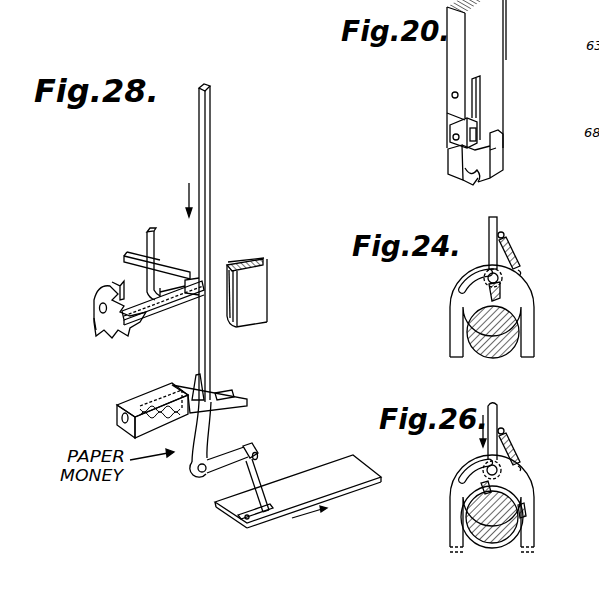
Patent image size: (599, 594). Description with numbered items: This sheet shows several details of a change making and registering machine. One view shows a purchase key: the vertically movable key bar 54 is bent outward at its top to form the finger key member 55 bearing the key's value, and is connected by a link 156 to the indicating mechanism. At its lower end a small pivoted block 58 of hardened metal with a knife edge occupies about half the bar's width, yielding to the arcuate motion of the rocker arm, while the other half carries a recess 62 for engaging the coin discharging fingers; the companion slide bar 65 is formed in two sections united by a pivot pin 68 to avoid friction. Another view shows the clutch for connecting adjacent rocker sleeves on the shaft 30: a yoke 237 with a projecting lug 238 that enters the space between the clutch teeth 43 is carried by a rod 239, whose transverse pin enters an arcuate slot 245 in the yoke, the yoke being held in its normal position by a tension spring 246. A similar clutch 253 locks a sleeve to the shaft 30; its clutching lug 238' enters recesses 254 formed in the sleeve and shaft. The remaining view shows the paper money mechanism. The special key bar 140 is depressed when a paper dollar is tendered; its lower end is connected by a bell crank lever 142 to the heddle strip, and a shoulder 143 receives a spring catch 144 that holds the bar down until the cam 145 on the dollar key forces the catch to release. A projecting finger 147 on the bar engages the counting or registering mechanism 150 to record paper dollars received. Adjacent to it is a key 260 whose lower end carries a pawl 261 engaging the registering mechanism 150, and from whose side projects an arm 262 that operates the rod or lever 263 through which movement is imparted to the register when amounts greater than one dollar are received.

In FIG. 28, the special key bar 140 is at (208, 142).
In FIG. 28, the key 260 is at (148, 236).
In FIG. 28, the rod or lever 263 is at (162, 273).
In FIG. 28, the arm 262 is at (186, 272).
In FIG. 28, the pawl 261 is at (108, 292).
In FIG. 28, the projecting finger 147 is at (167, 306).
In FIG. 28, the counting or registering mechanism 150 is at (94, 328).
In FIG. 28, the vertically movable bar 65 is at (261, 272).
In FIG. 28, the cam 145 is at (235, 320).
In FIG. 28, the shoulder 143 is at (196, 383).
In FIG. 28, the spring catch 144 is at (234, 394).
In FIG. 28, the bell crank lever 142 is at (258, 474).
In FIG. 28, the finger key member 55 is at (330, 468).
In FIG. 20, the key bar 54 is at (497, 43).
In FIG. 20, the link 156 is at (474, 114).
In FIG. 20, the pivot pin 68 is at (452, 139).
In FIG. 20, the pivoted block 58 is at (495, 161).
In FIG. 20, the recess 62 is at (473, 181).
In FIG. 24, the clutch 253 is at (456, 316).
In FIG. 24, the recesses 254 is at (520, 328).
In FIG. 24, the clutching lug 238' is at (530, 280).
In FIG. 24, the shaft 30 is at (500, 345).
In FIG. 26, the shaft 30 is at (492, 527).
In FIG. 26, the rod 239 is at (498, 404).
In FIG. 26, the tension spring 246 is at (515, 448).
In FIG. 26, the arcuate slot 245 is at (467, 473).
In FIG. 26, the projecting lug 238 is at (515, 514).
In FIG. 26, the yoke 237 is at (455, 513).
In FIG. 26, the clutch teeth 43 is at (521, 510).